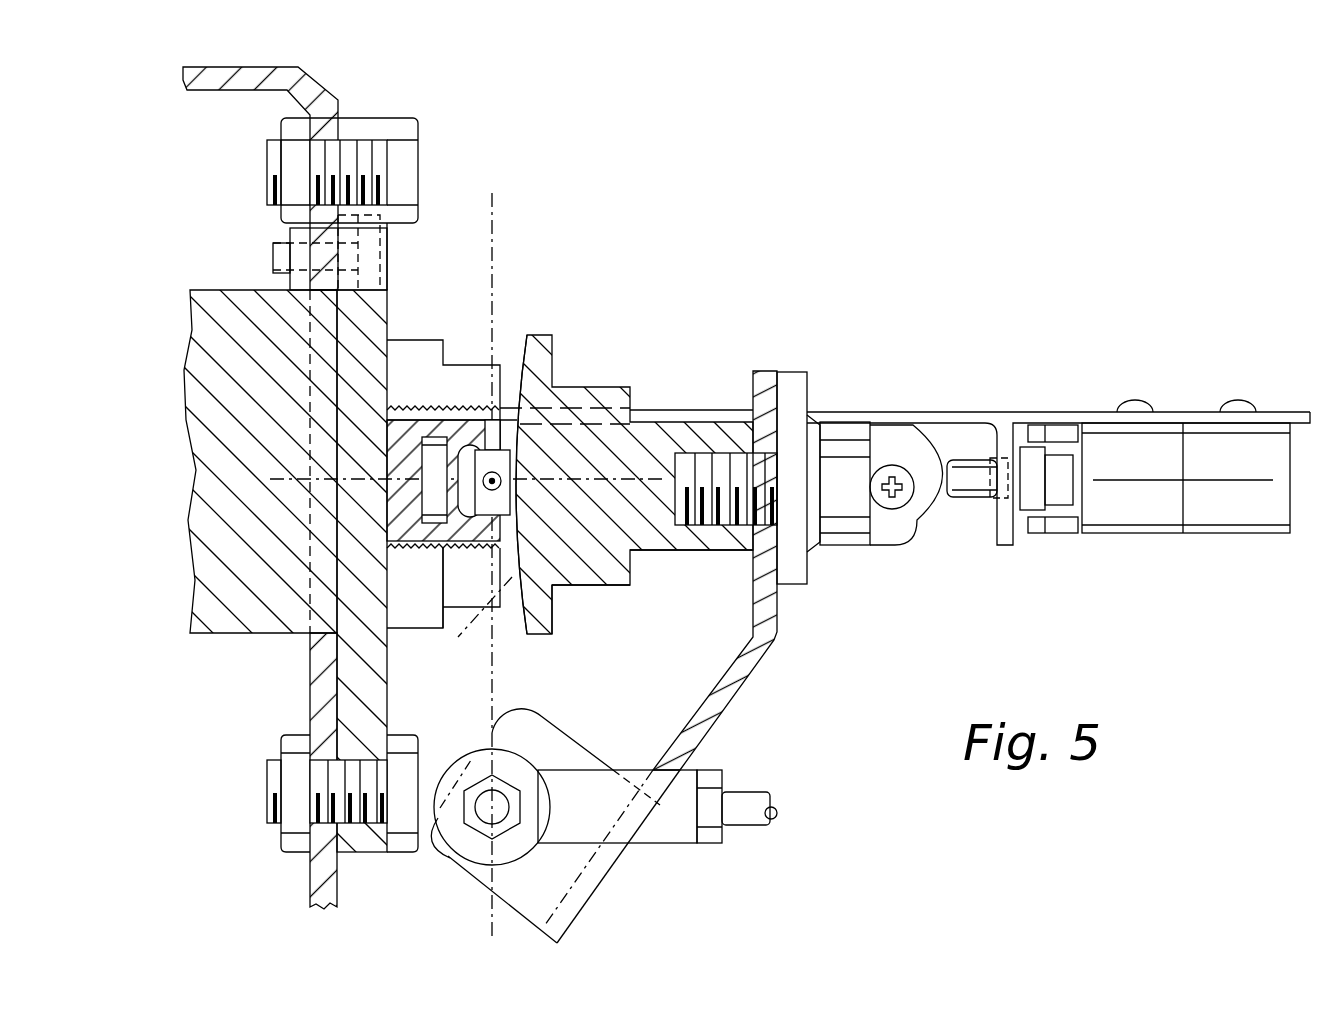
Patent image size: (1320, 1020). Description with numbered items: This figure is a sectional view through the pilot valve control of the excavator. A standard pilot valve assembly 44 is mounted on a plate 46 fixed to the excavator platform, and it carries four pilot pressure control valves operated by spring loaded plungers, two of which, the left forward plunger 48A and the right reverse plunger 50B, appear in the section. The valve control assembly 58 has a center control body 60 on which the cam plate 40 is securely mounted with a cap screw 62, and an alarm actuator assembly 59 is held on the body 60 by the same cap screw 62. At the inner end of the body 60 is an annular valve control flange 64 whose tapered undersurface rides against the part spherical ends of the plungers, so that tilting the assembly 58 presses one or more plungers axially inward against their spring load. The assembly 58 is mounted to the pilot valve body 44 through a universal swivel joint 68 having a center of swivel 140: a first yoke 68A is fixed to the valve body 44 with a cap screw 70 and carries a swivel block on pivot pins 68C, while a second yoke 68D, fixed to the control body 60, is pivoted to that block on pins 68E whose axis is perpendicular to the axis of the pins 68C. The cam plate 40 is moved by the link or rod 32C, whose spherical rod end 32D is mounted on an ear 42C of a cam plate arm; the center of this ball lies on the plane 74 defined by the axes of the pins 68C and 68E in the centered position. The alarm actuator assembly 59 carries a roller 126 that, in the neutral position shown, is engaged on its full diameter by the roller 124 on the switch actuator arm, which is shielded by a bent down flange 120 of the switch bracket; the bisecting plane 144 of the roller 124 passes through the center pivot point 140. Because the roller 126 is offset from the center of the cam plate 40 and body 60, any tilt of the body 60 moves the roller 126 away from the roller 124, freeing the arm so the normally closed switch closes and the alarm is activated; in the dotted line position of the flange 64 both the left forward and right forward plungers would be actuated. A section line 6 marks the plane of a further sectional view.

The section line 6- 6 is at (492, 193).
The cam plate 40 is at (735, 697).
The ear 42C is at (578, 752).
The link or rod 32C is at (740, 813).
The spherical rod end 32D is at (448, 875).
The pilot valve assembly 44 is at (242, 607).
The plate 46 is at (310, 870).
The plunger 48A is at (509, 600).
The plunger 50B is at (458, 363).
The valve control assembly 58 is at (499, 476).
The alarm actuator assembly 59 is at (1048, 402).
The center control body 60 is at (499, 485).
The cap screw 62 is at (843, 467).
The annular valve control flange 64 is at (555, 624).
The universal swivel joint 68 is at (515, 465).
The first yoke 68A is at (407, 520).
The pivot pins 68C is at (518, 517).
The second yoke 68D is at (518, 484).
The pins 68E is at (700, 548).
The cap screw 70 is at (447, 440).
The plane 74 is at (459, 824).
The bent down flange 120 is at (1017, 543).
The roller 124 is at (970, 473).
The roller 126 is at (917, 503).
The center of swivel 140 is at (493, 471).
The bisecting plane 144 is at (635, 480).